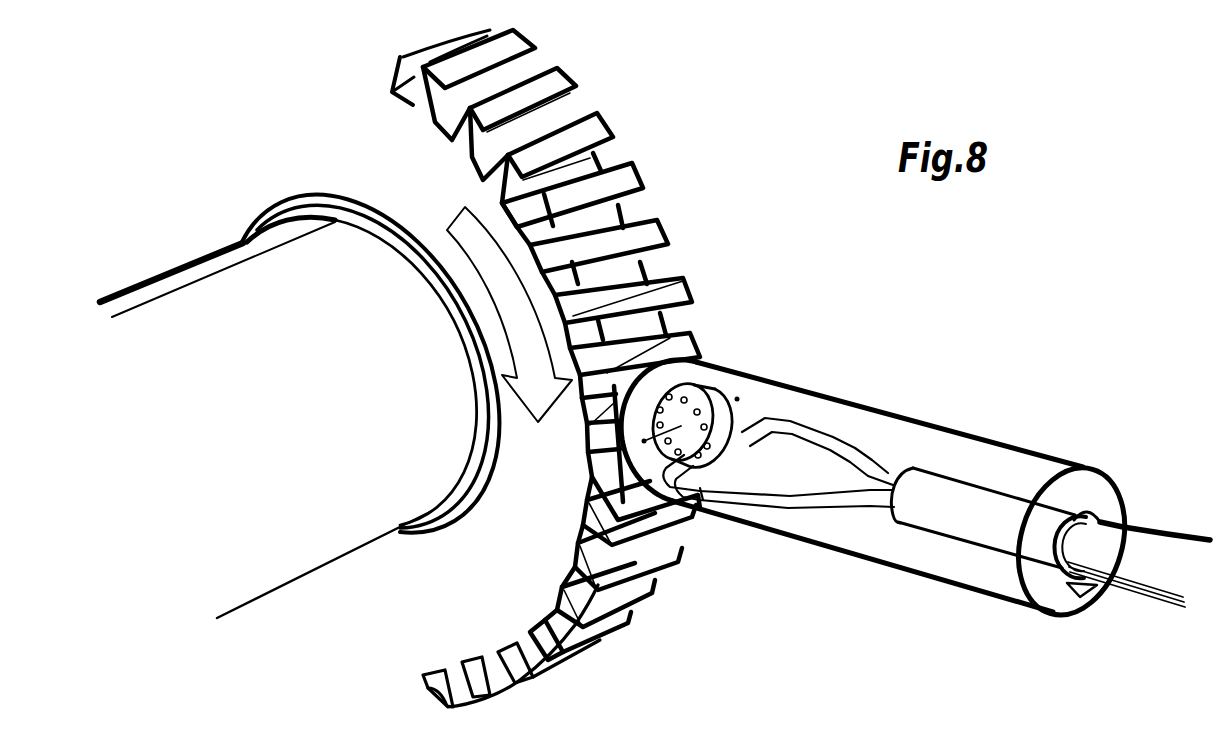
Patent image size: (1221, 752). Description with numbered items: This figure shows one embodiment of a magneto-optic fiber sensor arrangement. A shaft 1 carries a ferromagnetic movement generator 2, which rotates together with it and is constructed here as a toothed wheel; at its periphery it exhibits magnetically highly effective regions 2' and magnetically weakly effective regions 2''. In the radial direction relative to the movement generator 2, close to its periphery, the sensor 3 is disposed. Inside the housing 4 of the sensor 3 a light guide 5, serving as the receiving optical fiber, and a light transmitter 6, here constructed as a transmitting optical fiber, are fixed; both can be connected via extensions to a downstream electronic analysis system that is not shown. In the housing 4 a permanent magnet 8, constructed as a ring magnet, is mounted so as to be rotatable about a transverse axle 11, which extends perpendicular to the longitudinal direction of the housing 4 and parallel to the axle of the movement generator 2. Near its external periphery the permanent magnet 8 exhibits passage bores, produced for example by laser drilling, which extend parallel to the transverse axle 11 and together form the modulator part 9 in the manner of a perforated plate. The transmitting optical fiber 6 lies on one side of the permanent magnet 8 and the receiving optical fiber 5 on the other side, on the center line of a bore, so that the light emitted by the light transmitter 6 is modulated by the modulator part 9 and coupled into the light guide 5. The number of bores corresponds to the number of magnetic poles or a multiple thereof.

The shaft 1 is at (189, 297).
The ferromagnetic movement generator 2 is at (561, 368).
The magnetically highly effective region 2' is at (612, 178).
The magnetically weakly effective region 2'' is at (591, 127).
The sensor 3 is at (889, 482).
The housing 4 is at (980, 432).
The light guide 5 is at (762, 507).
The light transmitter 6 is at (830, 441).
The permanent magnet 8 is at (740, 408).
The modulator part 9 is at (700, 405).
The transverse axle 11 is at (640, 441).